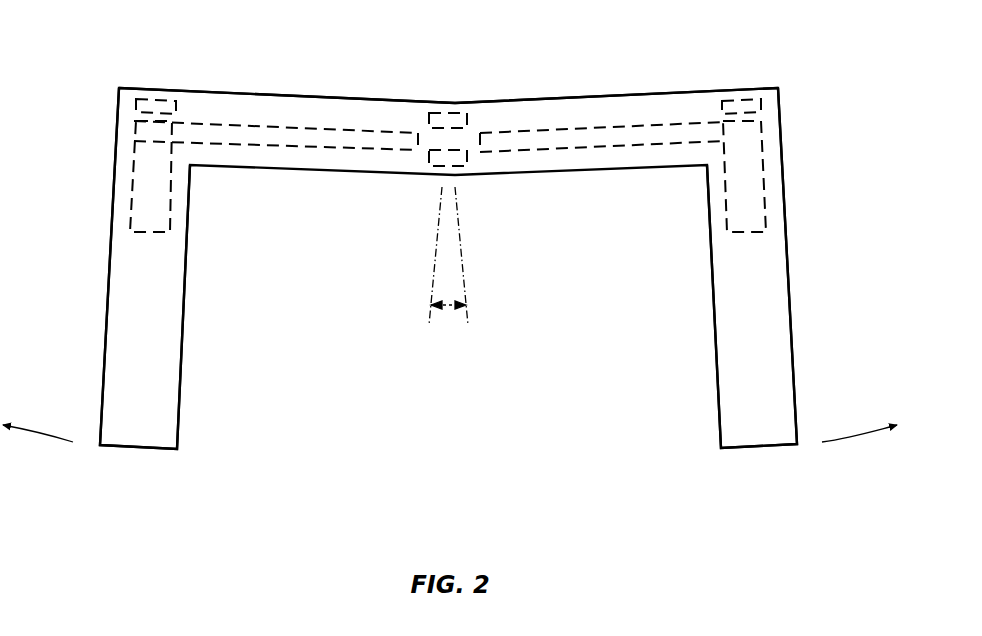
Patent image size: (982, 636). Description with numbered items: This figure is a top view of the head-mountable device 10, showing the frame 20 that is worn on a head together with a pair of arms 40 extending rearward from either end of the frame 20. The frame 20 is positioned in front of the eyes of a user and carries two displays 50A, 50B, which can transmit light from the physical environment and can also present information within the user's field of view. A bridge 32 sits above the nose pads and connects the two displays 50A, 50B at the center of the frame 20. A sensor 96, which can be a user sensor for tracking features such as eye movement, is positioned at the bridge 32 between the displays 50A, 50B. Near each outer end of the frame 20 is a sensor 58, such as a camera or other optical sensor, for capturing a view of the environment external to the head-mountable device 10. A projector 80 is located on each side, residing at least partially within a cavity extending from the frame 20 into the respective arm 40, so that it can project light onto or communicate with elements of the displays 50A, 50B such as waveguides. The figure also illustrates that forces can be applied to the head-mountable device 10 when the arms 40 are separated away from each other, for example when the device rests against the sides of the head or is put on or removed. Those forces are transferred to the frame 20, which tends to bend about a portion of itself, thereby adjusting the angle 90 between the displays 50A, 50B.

The head-mountable device 10 is at (70, 112).
The frame 20 is at (232, 93).
The bridge 32 is at (445, 103).
The arms 40 is at (128, 360).
The display 50A is at (277, 128).
The display 50B is at (605, 123).
The sensor 58 is at (137, 100).
The projector 80 is at (133, 193).
The angle 90 is at (448, 271).
The sensor 96 is at (463, 165).